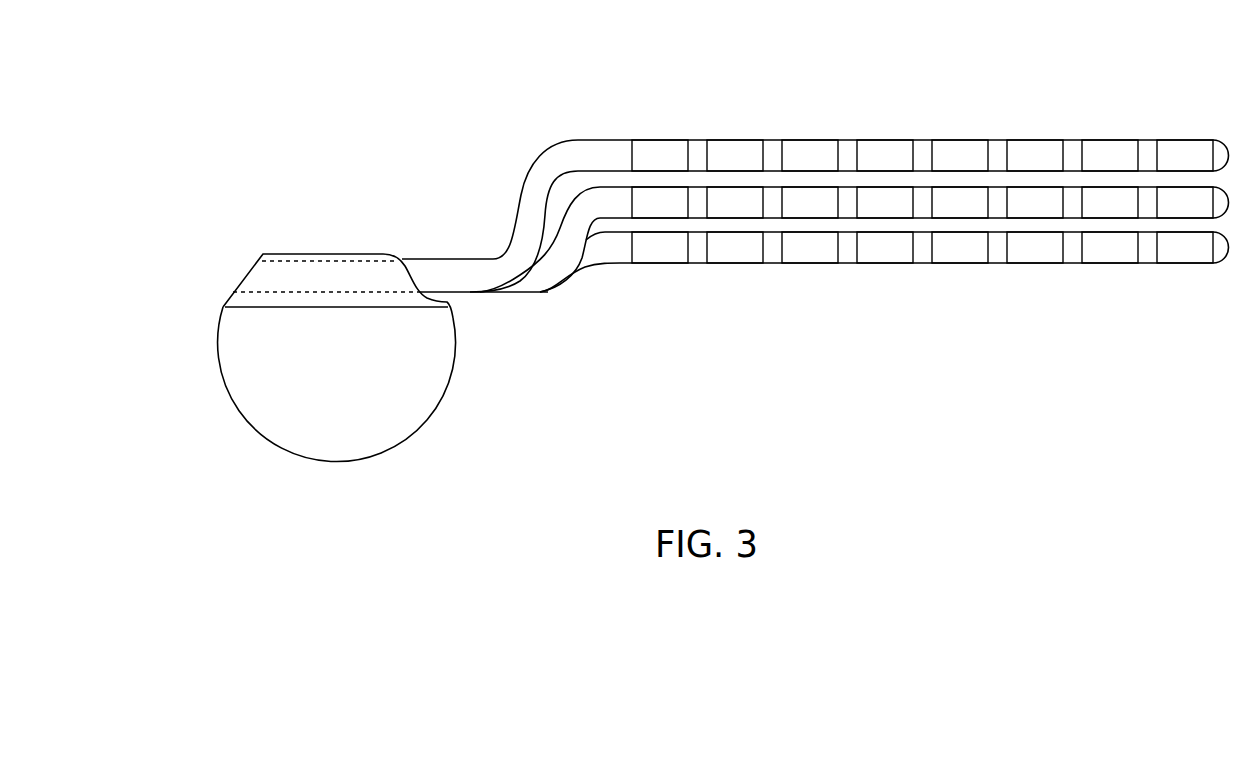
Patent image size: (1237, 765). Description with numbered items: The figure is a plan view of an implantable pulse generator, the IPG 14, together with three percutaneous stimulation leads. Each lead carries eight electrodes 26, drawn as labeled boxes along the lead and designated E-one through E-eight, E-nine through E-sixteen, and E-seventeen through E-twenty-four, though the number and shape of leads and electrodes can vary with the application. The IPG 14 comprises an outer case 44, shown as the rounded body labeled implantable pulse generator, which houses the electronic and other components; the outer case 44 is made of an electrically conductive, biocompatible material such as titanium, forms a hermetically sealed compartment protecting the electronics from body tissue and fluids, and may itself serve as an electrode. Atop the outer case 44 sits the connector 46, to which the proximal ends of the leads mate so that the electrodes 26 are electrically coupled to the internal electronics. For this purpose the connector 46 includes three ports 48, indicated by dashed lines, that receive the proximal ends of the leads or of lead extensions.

The implantable pulse generator (IPG) 14 is at (258, 205).
The electrodes 26 is at (810, 139).
The outer case 44 is at (448, 357).
The connector 46 is at (258, 287).
The ports 48 is at (347, 259).